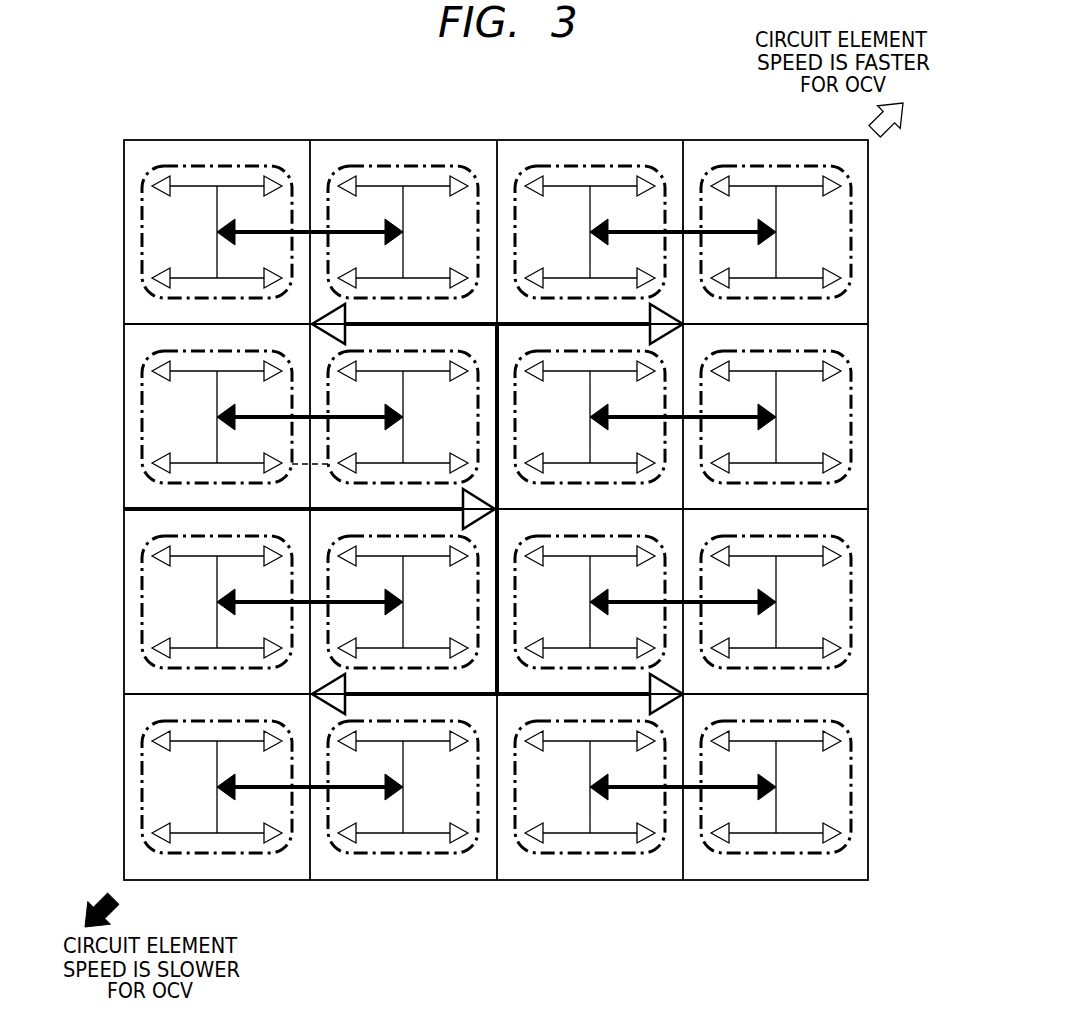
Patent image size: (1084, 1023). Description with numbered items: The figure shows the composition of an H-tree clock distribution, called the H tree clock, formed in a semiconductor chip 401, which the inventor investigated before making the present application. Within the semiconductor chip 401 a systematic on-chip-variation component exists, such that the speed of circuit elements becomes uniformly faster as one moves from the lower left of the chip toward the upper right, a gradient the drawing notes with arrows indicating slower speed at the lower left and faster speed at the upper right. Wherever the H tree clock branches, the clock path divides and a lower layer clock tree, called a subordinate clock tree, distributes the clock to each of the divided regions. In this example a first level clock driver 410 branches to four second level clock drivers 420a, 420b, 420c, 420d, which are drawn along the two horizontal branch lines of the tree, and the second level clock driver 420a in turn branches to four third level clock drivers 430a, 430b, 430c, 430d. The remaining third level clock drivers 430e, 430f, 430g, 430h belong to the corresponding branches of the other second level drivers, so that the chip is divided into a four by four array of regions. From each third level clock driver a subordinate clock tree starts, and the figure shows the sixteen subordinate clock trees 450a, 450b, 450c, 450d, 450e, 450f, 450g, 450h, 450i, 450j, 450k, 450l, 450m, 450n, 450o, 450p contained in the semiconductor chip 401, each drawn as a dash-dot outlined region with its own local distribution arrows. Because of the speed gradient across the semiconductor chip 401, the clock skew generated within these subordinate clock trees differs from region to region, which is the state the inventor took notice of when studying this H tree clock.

The semiconductor chip 401 is at (869, 216).
The first level clock driver 410 is at (500, 505).
The second level clock driver 420a is at (313, 693).
The second level clock driver 420b is at (684, 687).
The second level clock driver 420c is at (313, 323).
The second level clock driver 420d is at (684, 315).
The third level clock driver 430a is at (226, 784).
The third level clock driver 430b is at (398, 784).
The third level clock driver 430c is at (226, 600).
The third level clock driver 430d is at (398, 601).
The third level clock driver 430e is at (594, 413).
The third level clock driver 430f is at (772, 416).
The third level clock driver 430g is at (597, 232).
The third level clock driver 430h is at (772, 228).
The subordinate clock tree 450a is at (142, 763).
The subordinate clock tree 450b is at (340, 726).
The subordinate clock tree 450c is at (668, 725).
The subordinate clock tree 450d is at (852, 756).
The subordinate clock tree 450e is at (142, 575).
The subordinate clock tree 450f is at (334, 547).
The subordinate clock tree 450g is at (668, 540).
The subordinate clock tree 450h is at (852, 571).
The subordinate clock tree 450i is at (142, 388).
The subordinate clock tree 450j is at (334, 358).
The subordinate clock tree 450k is at (665, 352).
The subordinate clock tree 450l is at (852, 389).
The subordinate clock tree 450m is at (217, 166).
The subordinate clock tree 450n is at (403, 166).
The subordinate clock tree 450o is at (590, 166).
The subordinate clock tree 450p is at (776, 166).